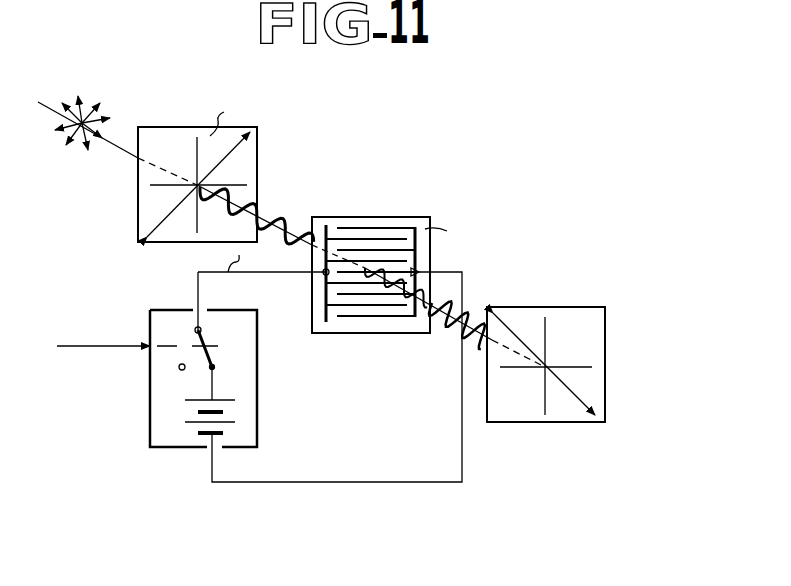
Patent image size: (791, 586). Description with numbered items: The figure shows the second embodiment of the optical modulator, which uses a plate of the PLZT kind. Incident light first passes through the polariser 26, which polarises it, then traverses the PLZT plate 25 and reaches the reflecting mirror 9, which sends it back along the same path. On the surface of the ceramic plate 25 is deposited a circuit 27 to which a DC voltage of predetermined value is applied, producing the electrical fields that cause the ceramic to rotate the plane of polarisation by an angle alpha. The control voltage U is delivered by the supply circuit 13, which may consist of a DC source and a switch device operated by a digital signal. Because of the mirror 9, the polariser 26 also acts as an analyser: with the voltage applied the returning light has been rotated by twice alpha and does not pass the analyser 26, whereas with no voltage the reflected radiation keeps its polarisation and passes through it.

The polariser 26 is at (258, 160).
The PLZT plate 25 is at (400, 217).
The circuit 27 is at (326, 322).
The supply circuit 13 is at (260, 420).
The reflecting mirror 9 is at (605, 348).